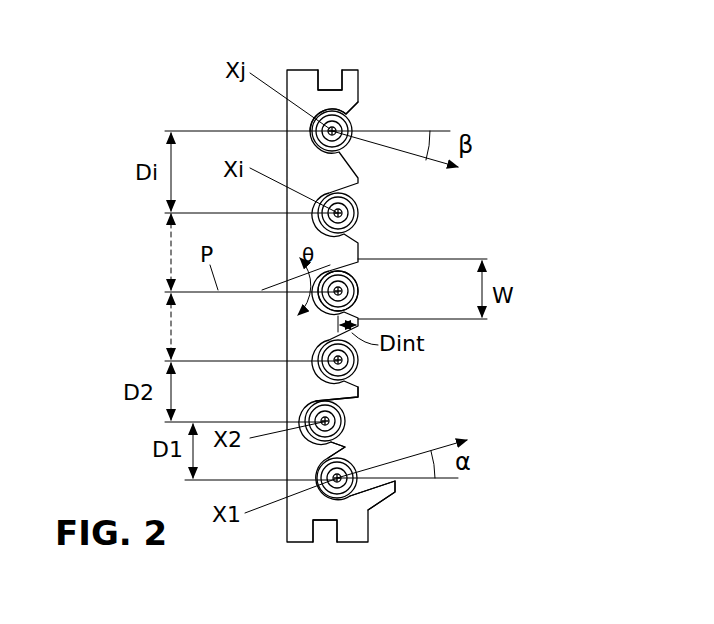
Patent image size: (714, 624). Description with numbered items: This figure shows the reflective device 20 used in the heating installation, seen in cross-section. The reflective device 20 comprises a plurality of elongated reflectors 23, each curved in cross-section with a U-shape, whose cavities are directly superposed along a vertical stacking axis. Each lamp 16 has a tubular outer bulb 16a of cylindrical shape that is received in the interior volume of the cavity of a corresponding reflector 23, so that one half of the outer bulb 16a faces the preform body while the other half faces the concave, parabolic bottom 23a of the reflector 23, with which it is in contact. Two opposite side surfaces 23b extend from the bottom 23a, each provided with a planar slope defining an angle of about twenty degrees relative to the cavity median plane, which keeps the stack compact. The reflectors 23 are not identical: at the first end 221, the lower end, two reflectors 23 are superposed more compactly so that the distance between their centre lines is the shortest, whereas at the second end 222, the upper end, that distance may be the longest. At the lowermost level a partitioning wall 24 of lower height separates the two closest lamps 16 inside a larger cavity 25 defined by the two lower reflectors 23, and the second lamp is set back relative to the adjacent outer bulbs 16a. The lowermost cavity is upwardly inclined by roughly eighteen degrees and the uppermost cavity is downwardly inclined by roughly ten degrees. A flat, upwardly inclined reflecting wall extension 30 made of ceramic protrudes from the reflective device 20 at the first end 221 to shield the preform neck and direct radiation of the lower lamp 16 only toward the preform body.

The reflective device 20 is at (302, 512).
The first end 221 is at (355, 542).
The second end 222 is at (302, 69).
The lamp 16 is at (336, 358).
The tubular outer bulb 16a is at (352, 268).
The elongated reflector 23 is at (368, 292).
The bottom 23a is at (318, 128).
The side surfaces 23b is at (348, 110).
The partitioning wall 24 is at (340, 450).
The larger cavity 25 is at (372, 420).
The reflecting wall extension 30 is at (392, 490).